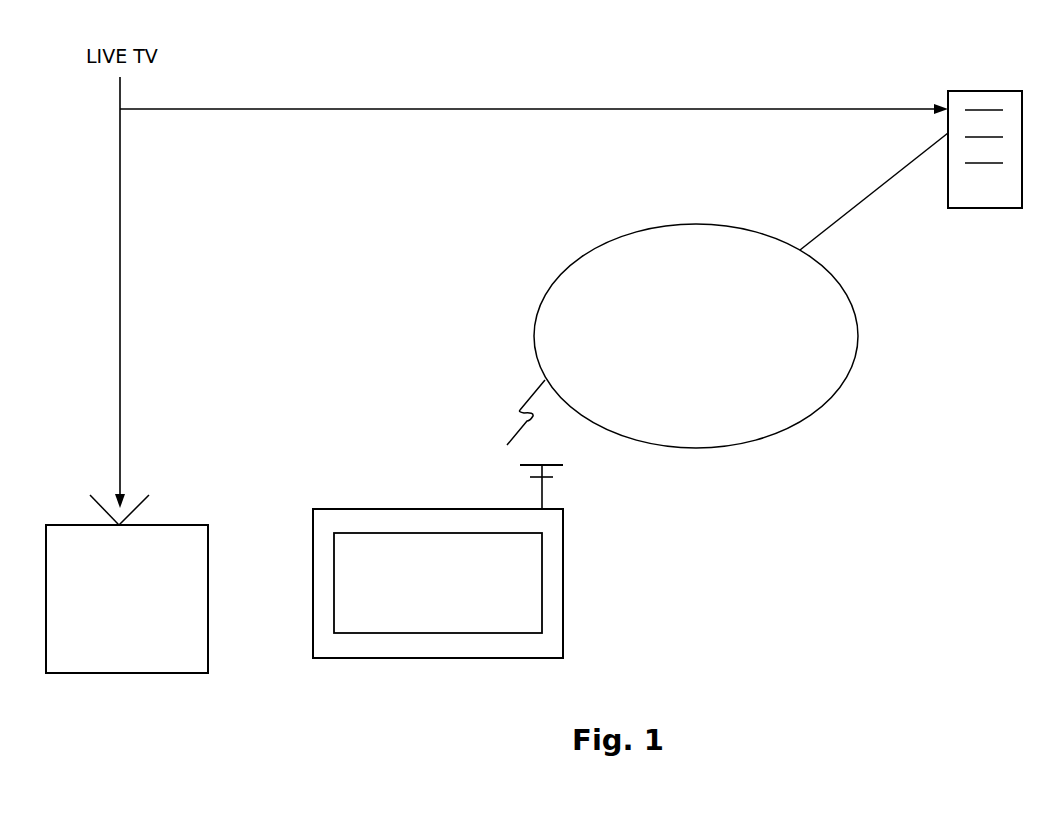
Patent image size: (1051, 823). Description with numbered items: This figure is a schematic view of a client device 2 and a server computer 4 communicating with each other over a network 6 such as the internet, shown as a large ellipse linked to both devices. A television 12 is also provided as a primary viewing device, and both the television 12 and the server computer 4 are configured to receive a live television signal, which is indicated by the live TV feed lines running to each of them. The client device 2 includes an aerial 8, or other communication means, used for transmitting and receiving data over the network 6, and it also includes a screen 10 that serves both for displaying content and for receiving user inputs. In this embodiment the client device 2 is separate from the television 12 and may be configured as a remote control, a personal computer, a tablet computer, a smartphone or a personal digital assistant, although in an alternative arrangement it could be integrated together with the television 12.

The client device 2 is at (426, 664).
The server computer 4 is at (978, 216).
The network 6 is at (727, 290).
The aerial 8 is at (578, 478).
The screen 10 is at (504, 583).
The television 12 is at (119, 673).